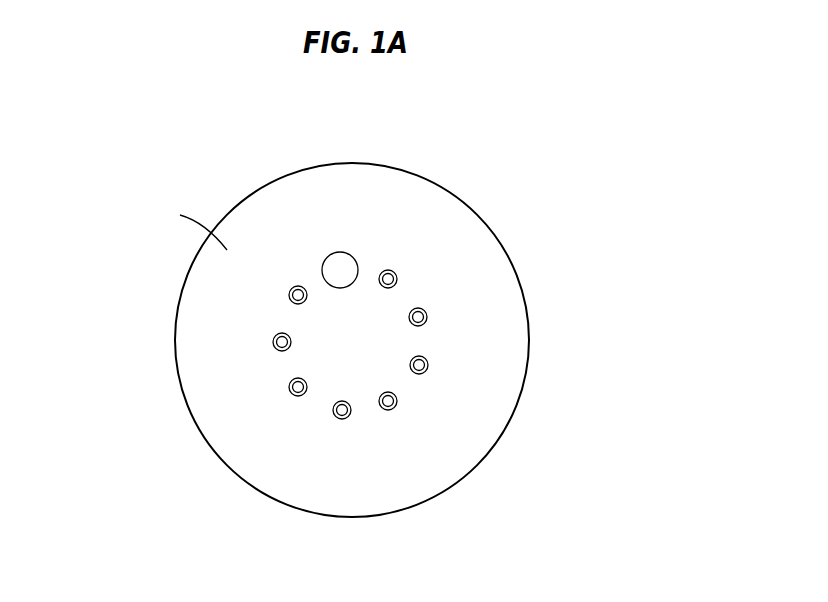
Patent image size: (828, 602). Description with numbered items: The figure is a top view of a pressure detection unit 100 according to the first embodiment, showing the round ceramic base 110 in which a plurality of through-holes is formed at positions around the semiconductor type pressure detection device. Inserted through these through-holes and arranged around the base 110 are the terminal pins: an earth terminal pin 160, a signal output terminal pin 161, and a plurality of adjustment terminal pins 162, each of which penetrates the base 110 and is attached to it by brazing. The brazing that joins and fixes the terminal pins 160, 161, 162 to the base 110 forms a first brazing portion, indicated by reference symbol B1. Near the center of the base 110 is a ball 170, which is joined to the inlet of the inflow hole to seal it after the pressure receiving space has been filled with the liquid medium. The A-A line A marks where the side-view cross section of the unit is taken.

The pressure detection unit 100 is at (547, 176).
The base 110 is at (194, 221).
The earth terminal pin 160 is at (274, 335).
The signal output terminal pin 161 is at (296, 287).
The adjustment terminal pins 162 is at (398, 278).
The ball 170 is at (340, 268).
The first brazing portion B1 is at (387, 270).
The A-A line A is at (147, 345).